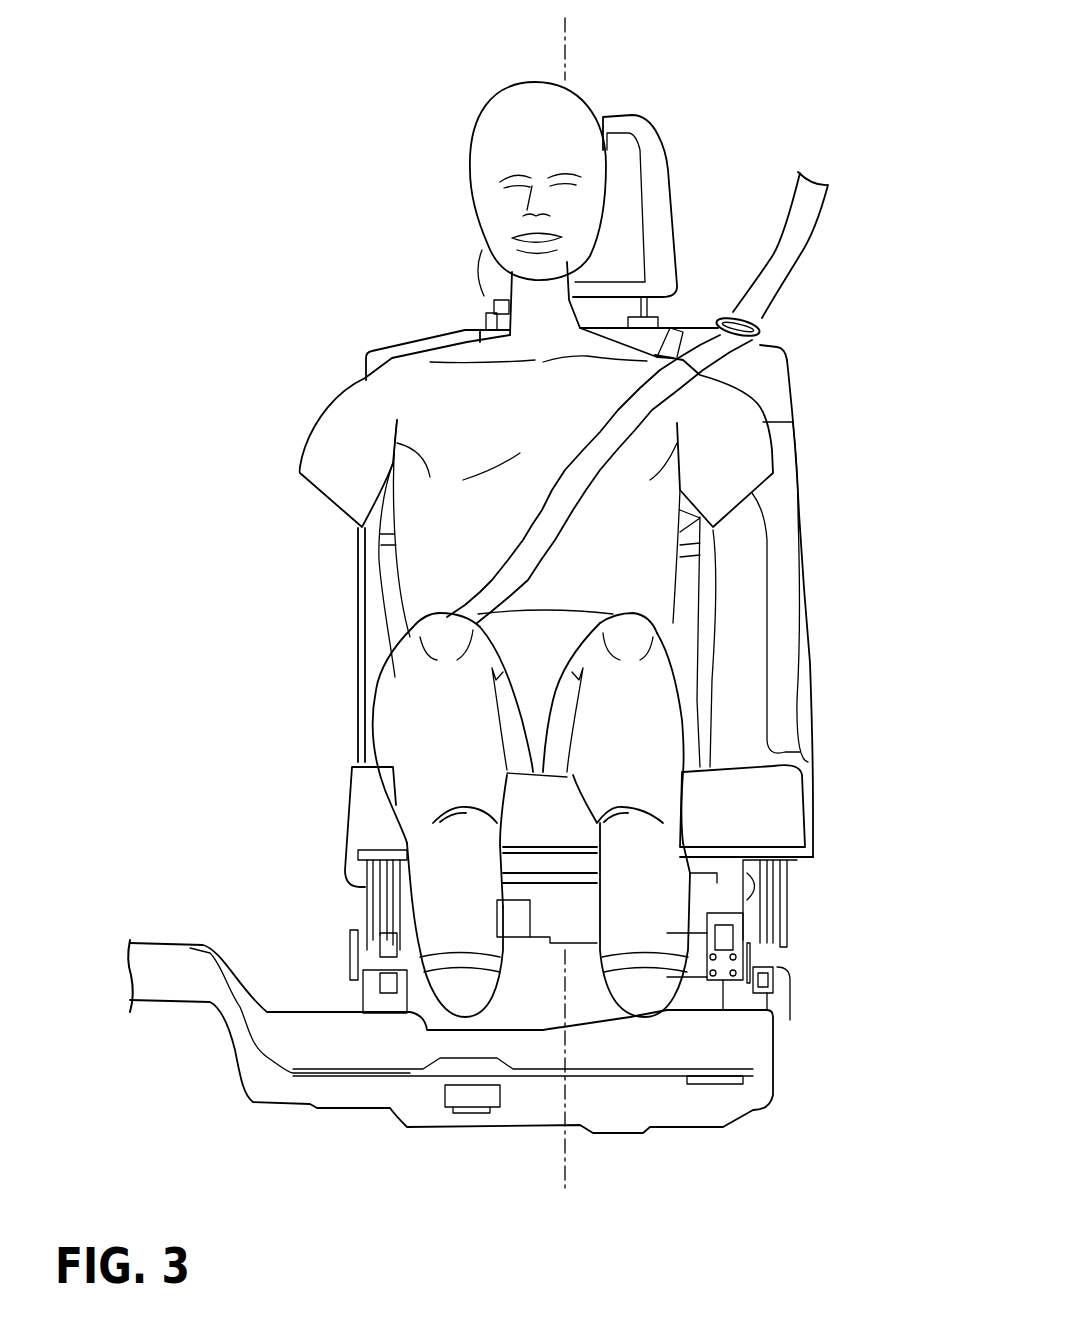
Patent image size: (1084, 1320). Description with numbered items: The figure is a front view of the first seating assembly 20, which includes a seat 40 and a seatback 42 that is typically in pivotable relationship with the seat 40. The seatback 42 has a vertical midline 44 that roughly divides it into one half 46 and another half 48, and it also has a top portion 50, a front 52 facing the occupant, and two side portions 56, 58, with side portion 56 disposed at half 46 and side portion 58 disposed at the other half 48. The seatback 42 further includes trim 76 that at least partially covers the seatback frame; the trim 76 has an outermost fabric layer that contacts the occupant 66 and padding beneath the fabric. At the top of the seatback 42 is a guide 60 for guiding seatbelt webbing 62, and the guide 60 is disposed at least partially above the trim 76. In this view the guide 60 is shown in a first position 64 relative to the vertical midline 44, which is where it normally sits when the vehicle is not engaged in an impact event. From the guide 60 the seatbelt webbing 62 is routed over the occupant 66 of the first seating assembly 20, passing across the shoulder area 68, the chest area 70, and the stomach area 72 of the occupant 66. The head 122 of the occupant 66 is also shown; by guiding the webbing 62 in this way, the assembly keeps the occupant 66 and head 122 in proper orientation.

The first seating assembly 20 is at (246, 208).
The seat 40 is at (743, 797).
The seatback 42 is at (793, 477).
The vertical midline 44 is at (566, 38).
The half 46 is at (742, 584).
The other half 48 is at (390, 637).
The top portion 50 is at (400, 347).
The front 52 is at (388, 557).
The side portion 56 is at (810, 663).
The side portion 58 is at (360, 713).
The guide 60 is at (767, 330).
The seatbelt webbing 62 is at (798, 229).
The first position 64 is at (676, 363).
The occupant 66 is at (464, 184).
The shoulder area 68 is at (670, 328).
The chest area 70 is at (497, 405).
The stomach area 72 is at (493, 557).
The trim 76 is at (457, 330).
The head 122 is at (504, 84).